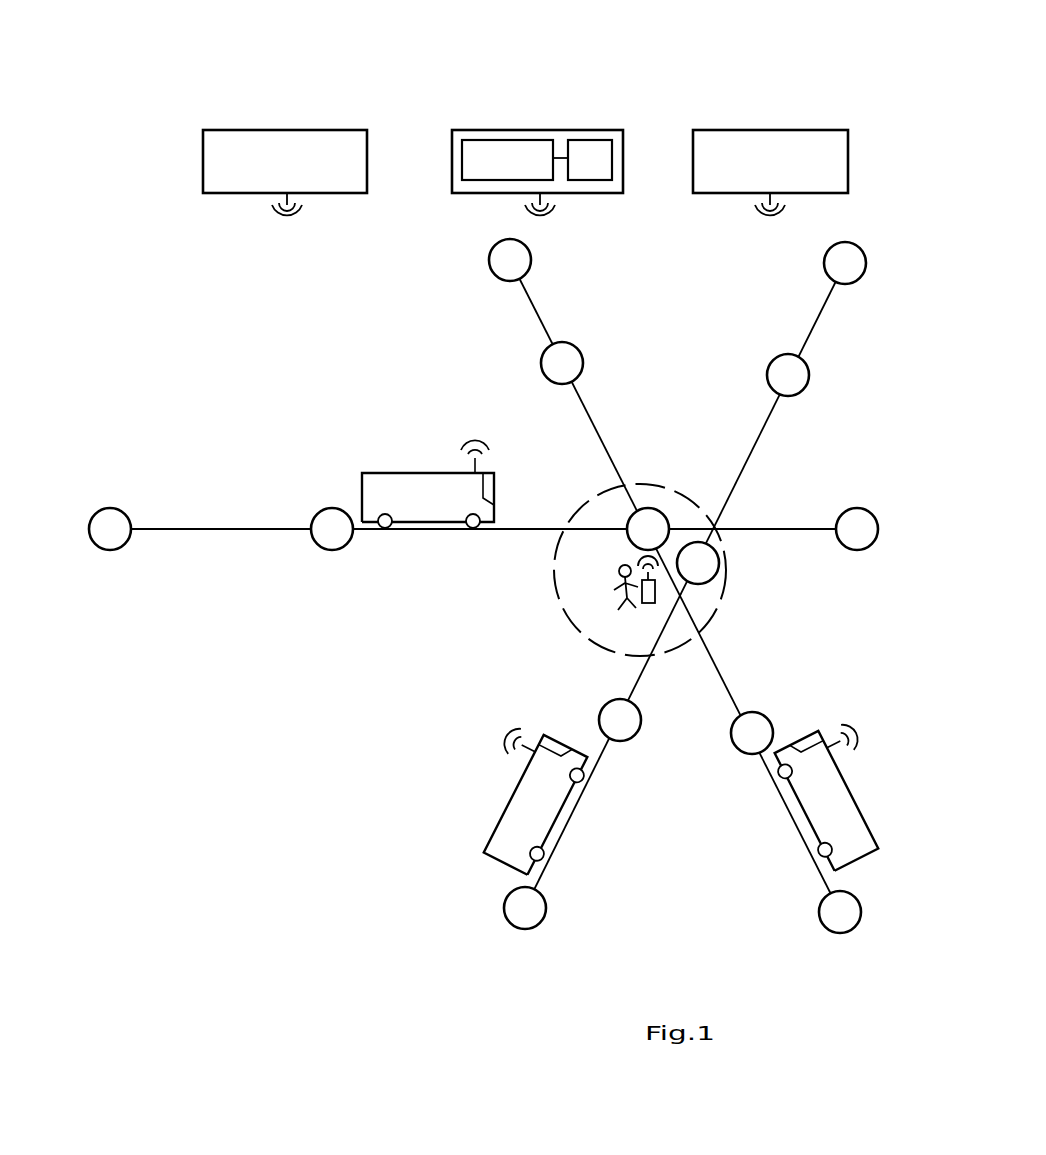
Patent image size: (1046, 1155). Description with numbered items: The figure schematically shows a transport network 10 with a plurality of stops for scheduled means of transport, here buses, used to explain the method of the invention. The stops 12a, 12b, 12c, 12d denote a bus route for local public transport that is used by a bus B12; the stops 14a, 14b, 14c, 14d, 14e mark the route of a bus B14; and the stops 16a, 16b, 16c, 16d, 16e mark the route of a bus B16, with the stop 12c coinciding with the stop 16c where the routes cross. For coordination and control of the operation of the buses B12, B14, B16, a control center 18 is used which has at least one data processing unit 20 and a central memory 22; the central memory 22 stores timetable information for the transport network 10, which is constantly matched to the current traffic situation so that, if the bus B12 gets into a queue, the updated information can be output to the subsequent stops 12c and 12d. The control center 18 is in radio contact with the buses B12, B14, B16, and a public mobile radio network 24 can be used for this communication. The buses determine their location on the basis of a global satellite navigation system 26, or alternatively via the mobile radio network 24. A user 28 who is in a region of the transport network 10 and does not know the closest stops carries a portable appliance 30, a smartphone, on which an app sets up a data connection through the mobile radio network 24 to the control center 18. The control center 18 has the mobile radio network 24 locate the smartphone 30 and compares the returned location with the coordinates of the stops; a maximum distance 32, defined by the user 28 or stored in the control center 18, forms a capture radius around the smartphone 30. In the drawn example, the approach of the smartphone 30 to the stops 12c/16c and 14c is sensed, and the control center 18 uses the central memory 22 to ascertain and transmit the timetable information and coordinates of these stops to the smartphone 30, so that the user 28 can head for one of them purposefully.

The transport network 10 is at (303, 799).
The stop 12a is at (102, 510).
The stop 12b is at (318, 510).
The stop 12c is at (657, 508).
The stop 12d is at (867, 507).
The stop 14a is at (548, 905).
The stop 14b is at (629, 742).
The stop 14c is at (719, 558).
The stop 14d is at (809, 377).
The stop 14e is at (866, 265).
The stop 16a is at (820, 906).
The stop 16b is at (750, 757).
The stop 16c is at (612, 521).
The stop 16d is at (541, 369).
The stop 16e is at (490, 268).
The control center 18 is at (520, 140).
The data processing unit 20 is at (472, 153).
The central memory 22 is at (590, 150).
The public mobile radio network 24 is at (757, 140).
The global satellite navigation system 26 is at (290, 148).
The user 28 is at (617, 590).
The portable appliance 30 is at (648, 605).
The maximum distance 32 is at (555, 552).
The bus B12 is at (415, 484).
The bus B14 is at (522, 815).
The bus B16 is at (848, 808).